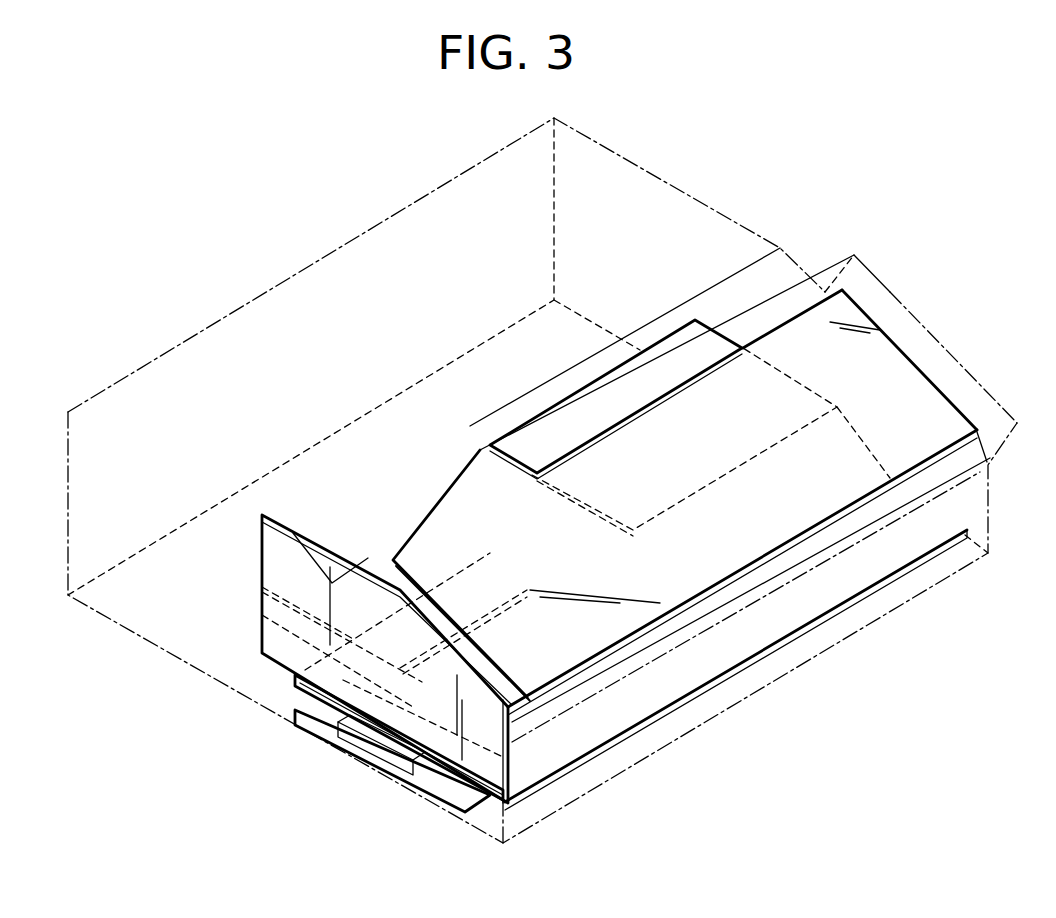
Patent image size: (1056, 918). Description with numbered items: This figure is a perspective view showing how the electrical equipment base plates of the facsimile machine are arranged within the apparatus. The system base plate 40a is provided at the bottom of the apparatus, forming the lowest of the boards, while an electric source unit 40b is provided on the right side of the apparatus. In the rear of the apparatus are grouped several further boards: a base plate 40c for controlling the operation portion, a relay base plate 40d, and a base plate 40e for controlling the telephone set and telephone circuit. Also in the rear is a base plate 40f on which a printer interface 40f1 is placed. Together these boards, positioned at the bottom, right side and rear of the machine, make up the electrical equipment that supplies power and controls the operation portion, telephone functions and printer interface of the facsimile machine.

The system base plate 40a is at (795, 620).
The electric source unit 40b is at (625, 375).
The base plate for controlling the operation portion 40c is at (890, 363).
The relay base plate 40d is at (425, 497).
The base plate for controlling the telephone set and telephone circuit 40e is at (265, 636).
The base plate having a printer interface 40f is at (440, 783).
The printer interface 40f1 is at (357, 738).